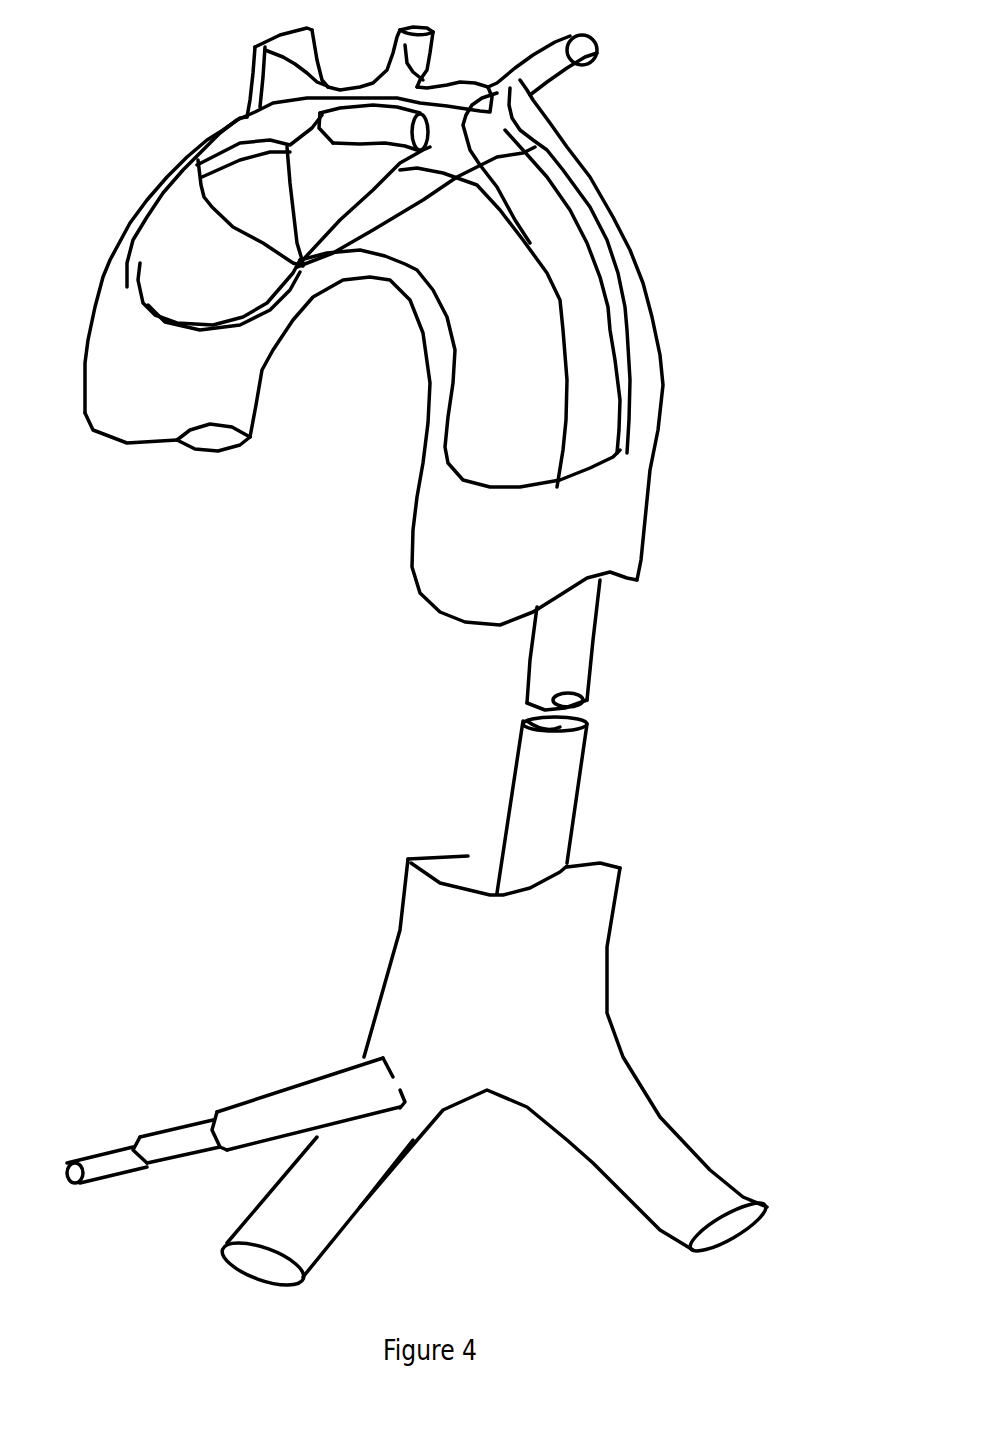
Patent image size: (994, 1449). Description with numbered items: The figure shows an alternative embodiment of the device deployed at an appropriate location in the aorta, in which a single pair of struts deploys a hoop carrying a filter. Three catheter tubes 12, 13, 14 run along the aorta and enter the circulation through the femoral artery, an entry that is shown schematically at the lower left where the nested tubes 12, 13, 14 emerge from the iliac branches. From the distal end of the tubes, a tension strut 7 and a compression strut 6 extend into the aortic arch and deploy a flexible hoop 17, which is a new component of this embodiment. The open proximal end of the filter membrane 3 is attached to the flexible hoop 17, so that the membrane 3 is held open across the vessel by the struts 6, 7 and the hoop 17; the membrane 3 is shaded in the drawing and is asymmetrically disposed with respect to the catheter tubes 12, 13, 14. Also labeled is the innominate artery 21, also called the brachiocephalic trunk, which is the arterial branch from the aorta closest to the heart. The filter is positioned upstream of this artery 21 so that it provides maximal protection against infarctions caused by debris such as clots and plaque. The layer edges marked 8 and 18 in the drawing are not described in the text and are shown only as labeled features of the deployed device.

The filter membrane 3 is at (333, 183).
The compression strut 6 is at (287, 183).
The tension strut 7 is at (380, 192).
The second layer 8 is at (447, 143).
The tube 12 is at (548, 205).
The tube 13 is at (385, 122).
The tube 14 is at (267, 145).
The flexible hoop 17 is at (275, 252).
The third layer 18 is at (455, 160).
The innominate artery 21 is at (252, 50).